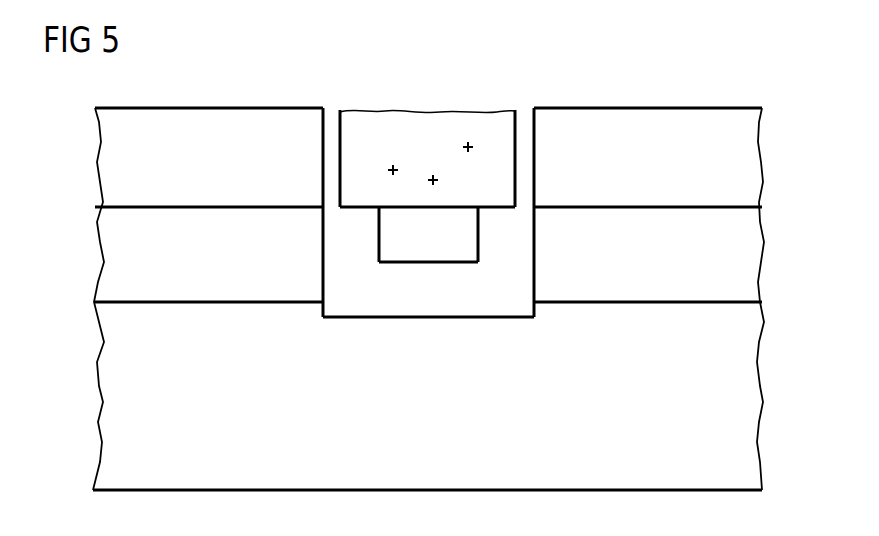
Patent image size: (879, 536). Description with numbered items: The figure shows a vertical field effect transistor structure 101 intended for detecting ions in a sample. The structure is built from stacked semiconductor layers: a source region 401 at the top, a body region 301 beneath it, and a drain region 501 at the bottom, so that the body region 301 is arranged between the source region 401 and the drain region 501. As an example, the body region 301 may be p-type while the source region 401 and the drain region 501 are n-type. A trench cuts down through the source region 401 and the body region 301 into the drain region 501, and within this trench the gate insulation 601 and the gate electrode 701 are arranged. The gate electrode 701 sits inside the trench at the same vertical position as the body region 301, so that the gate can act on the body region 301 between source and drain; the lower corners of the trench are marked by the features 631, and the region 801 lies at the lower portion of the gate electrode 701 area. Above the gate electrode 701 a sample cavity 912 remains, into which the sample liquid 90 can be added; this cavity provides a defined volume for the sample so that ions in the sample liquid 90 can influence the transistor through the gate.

The vertical field effect transistor structure 101 is at (703, 66).
The source region 401 is at (105, 168).
The body region 301 is at (107, 260).
The drain region 501 is at (752, 406).
The gate insulation 601 is at (423, 308).
The trench corner regions 631 is at (328, 290).
The sample cavity 912 is at (510, 124).
The sample liquid 90 is at (404, 120).
The gate electrode 701 is at (455, 216).
The inner recess structure 801 is at (378, 205).